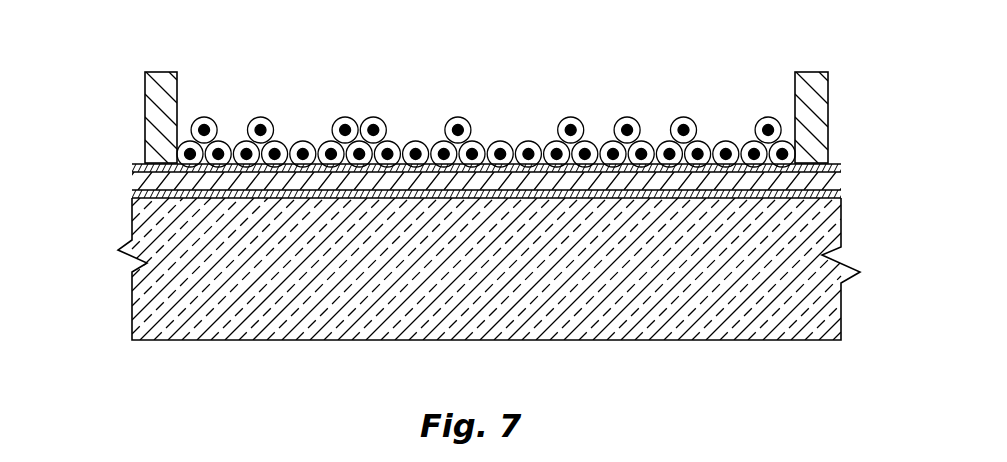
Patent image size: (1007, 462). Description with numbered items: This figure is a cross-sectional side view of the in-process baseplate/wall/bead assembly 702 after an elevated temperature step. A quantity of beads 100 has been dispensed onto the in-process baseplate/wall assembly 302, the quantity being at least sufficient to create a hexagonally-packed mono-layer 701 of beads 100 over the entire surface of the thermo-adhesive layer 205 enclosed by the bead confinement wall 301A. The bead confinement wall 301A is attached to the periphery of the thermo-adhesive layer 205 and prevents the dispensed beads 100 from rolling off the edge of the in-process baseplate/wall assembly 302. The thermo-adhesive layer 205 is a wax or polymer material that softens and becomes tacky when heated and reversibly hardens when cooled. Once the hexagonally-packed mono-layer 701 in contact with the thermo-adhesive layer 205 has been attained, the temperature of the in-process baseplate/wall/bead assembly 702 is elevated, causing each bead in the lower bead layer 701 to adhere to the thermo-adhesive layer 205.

The beads 100 is at (552, 112).
The hexagonally-packed mono-layer 701 is at (185, 152).
The bead confinement wall 301A is at (165, 97).
The thermo-adhesive layer 205 is at (841, 163).
The in-process baseplate/wall assembly 302 is at (130, 73).
The in-process baseplate/wall/bead assembly 702 is at (849, 212).